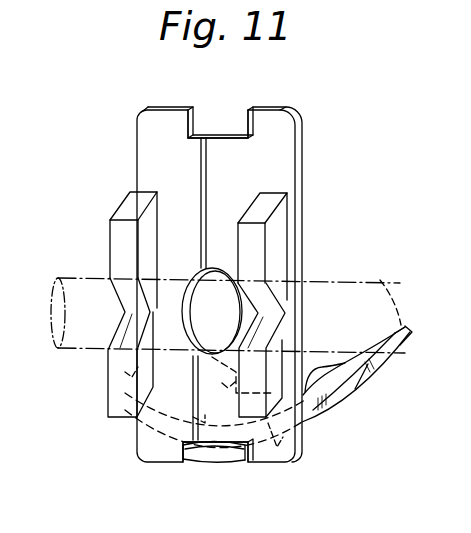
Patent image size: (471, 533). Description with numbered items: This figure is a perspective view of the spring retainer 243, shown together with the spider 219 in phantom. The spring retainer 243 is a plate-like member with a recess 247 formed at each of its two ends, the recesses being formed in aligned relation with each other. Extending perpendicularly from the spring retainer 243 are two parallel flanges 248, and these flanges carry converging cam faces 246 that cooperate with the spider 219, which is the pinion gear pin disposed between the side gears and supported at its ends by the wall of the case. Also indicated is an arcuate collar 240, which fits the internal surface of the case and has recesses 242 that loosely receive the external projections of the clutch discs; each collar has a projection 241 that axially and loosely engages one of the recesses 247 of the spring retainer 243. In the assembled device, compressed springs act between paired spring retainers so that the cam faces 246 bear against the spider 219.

The spider 219 is at (383, 282).
The arcuate collar 240 is at (357, 388).
The projection 241 is at (200, 455).
The recess 242 is at (305, 385).
The spring retainer 243 is at (281, 142).
The converging cam faces 246 is at (273, 333).
The recess 247 is at (248, 122).
The parallel flanges 248 is at (118, 250).